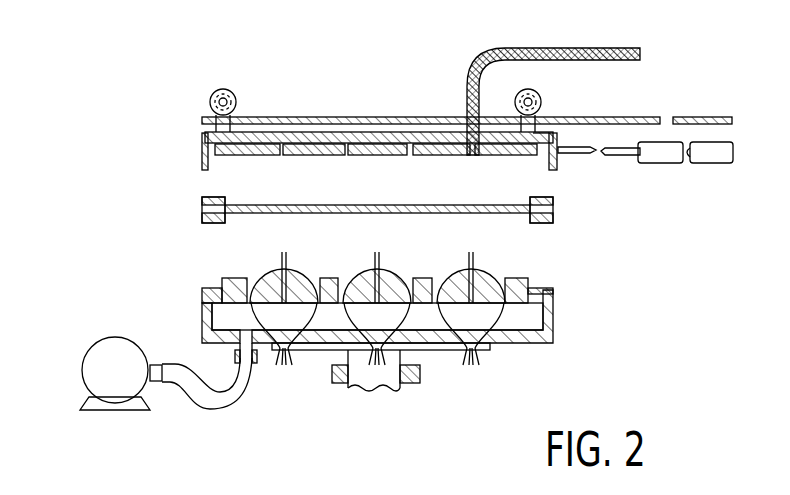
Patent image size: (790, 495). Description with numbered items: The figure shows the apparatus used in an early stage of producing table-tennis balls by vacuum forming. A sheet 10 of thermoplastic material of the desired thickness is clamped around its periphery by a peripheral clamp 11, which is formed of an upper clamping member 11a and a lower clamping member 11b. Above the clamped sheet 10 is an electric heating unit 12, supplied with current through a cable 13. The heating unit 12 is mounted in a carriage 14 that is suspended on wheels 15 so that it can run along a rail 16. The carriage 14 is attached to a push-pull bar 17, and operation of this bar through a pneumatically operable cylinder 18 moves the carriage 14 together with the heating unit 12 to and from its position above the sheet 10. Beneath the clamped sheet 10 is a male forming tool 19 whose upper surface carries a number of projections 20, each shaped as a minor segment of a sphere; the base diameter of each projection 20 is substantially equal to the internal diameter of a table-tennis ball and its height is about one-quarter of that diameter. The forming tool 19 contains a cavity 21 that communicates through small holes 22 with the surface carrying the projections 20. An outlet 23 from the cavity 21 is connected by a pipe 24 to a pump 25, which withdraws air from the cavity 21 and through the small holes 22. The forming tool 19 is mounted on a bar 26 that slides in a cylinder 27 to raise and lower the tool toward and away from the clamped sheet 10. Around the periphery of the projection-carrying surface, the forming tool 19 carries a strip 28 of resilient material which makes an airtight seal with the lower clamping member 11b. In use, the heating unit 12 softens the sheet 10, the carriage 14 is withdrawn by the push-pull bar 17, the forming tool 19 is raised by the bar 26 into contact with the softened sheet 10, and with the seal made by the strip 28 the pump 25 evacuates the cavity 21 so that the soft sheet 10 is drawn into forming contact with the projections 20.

The sheet 10 is at (392, 205).
The peripheral clamp 11 is at (560, 213).
The upper clamping member 11a is at (212, 198).
The lower clamping member 11b is at (212, 223).
The electric heating unit 12 is at (243, 156).
The cable 13 is at (525, 48).
The carriage 14 is at (203, 138).
The wheels 15 is at (236, 99).
The rail 16 is at (363, 117).
The push-pull bar 17 is at (593, 152).
The cylinder 18 is at (673, 158).
The male forming tool 19 is at (540, 289).
The projections 20 is at (295, 272).
The cavity 21 is at (222, 317).
The small holes 22 is at (378, 373).
The outlet 23 is at (243, 352).
The pipe 24 is at (223, 401).
The pump 25 is at (121, 373).
The bar 26 is at (380, 384).
The cylinder 27 is at (407, 383).
The strip of resilient material 28 is at (203, 290).